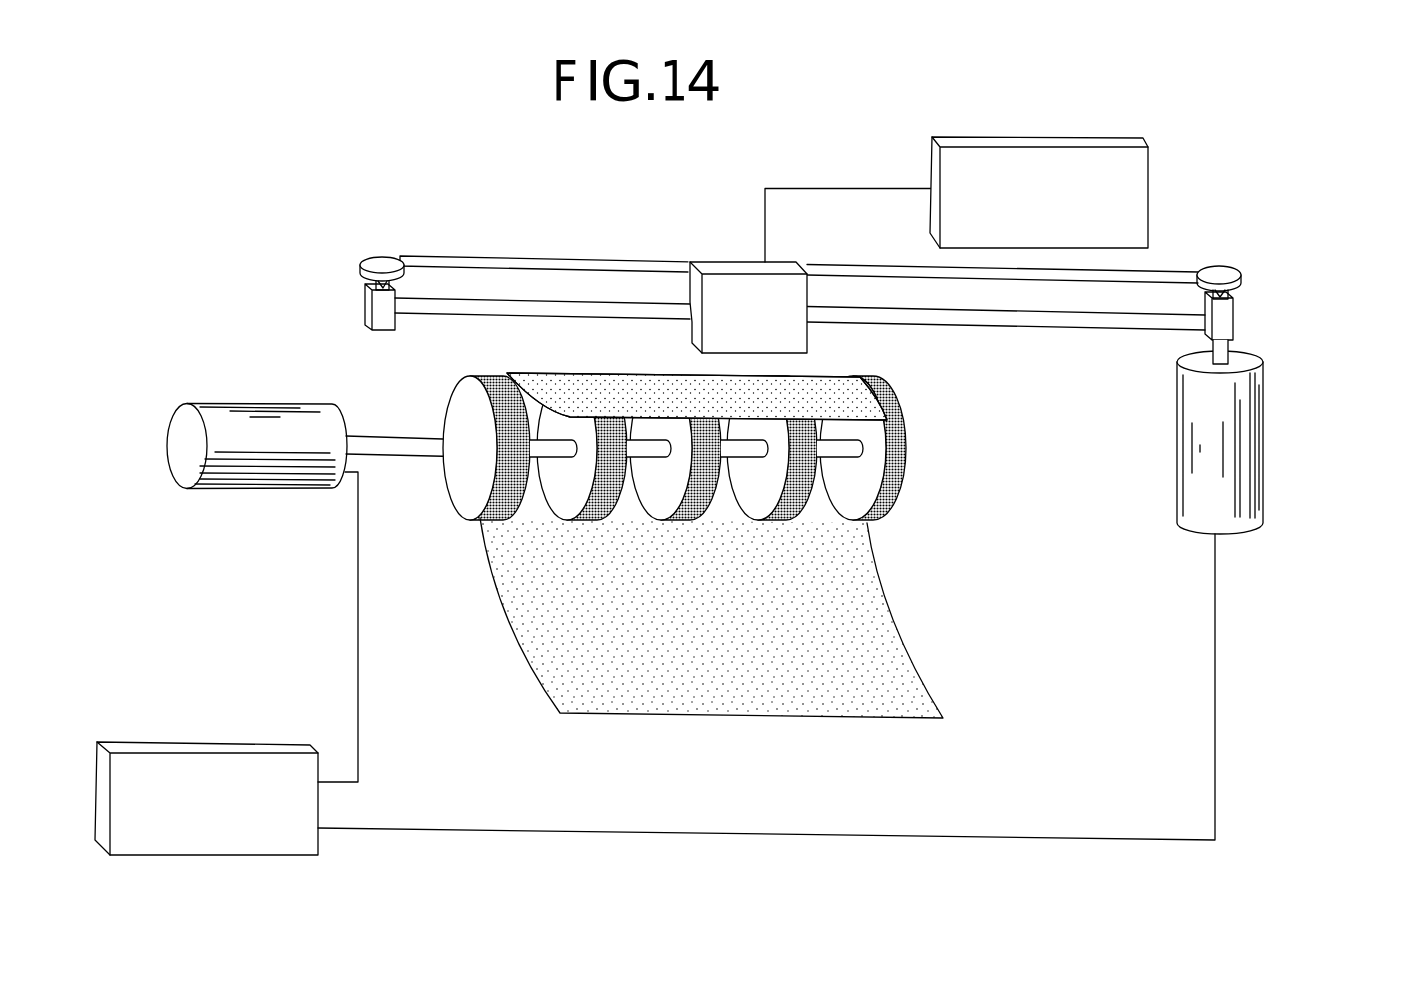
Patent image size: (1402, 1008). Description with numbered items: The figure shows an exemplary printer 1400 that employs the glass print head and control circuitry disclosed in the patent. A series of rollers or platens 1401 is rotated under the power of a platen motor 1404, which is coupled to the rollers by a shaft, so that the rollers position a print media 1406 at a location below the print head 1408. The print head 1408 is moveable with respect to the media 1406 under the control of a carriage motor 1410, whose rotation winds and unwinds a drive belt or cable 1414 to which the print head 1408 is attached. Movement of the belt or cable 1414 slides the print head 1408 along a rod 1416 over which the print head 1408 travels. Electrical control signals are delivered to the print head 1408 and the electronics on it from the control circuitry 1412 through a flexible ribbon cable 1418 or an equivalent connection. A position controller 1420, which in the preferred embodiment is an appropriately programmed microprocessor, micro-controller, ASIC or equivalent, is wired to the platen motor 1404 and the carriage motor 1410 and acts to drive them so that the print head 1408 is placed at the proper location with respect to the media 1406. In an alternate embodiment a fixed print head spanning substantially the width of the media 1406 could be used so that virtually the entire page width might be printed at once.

The printer 1400 is at (968, 93).
The rollers 1401 is at (907, 498).
The platen motor 1404 is at (257, 404).
The print media 1406 is at (915, 673).
The print head 1408 is at (735, 262).
The carriage motor 1410 is at (1262, 457).
The control circuitry 1412 is at (1148, 185).
The drive belt or cable 1414 is at (1182, 268).
The rod 1416 is at (952, 325).
The flexible ribbon cable 1418 is at (862, 150).
The position controller 1420 is at (240, 855).